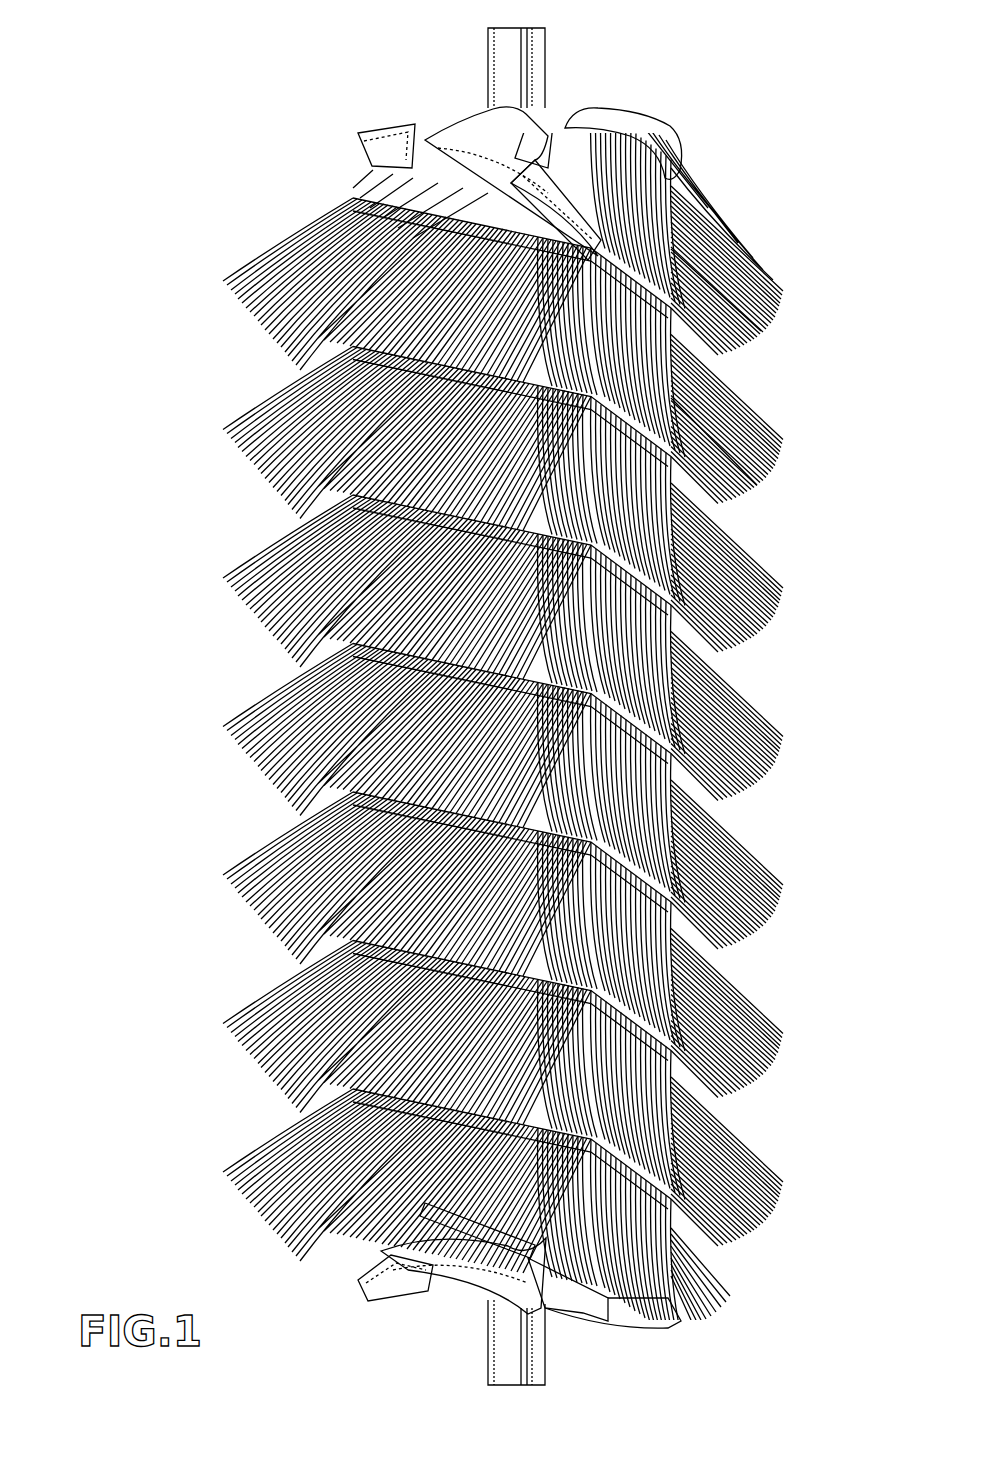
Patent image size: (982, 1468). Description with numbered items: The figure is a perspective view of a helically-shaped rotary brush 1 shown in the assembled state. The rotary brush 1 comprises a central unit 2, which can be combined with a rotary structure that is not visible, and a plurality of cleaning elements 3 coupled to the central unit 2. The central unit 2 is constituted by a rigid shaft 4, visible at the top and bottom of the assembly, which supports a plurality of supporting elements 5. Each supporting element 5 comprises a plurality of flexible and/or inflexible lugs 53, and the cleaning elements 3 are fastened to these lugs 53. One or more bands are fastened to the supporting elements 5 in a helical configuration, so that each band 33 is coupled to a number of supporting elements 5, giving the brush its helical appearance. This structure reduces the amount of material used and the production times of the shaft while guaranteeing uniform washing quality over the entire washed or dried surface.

The rotary brush 1 is at (158, 158).
The central unit 2 is at (548, 90).
The cleaning elements 3 is at (756, 241).
The band 33 is at (738, 304).
The rigid shaft 4 is at (510, 47).
The supporting elements 5 is at (370, 113).
The lugs 53 is at (443, 122).